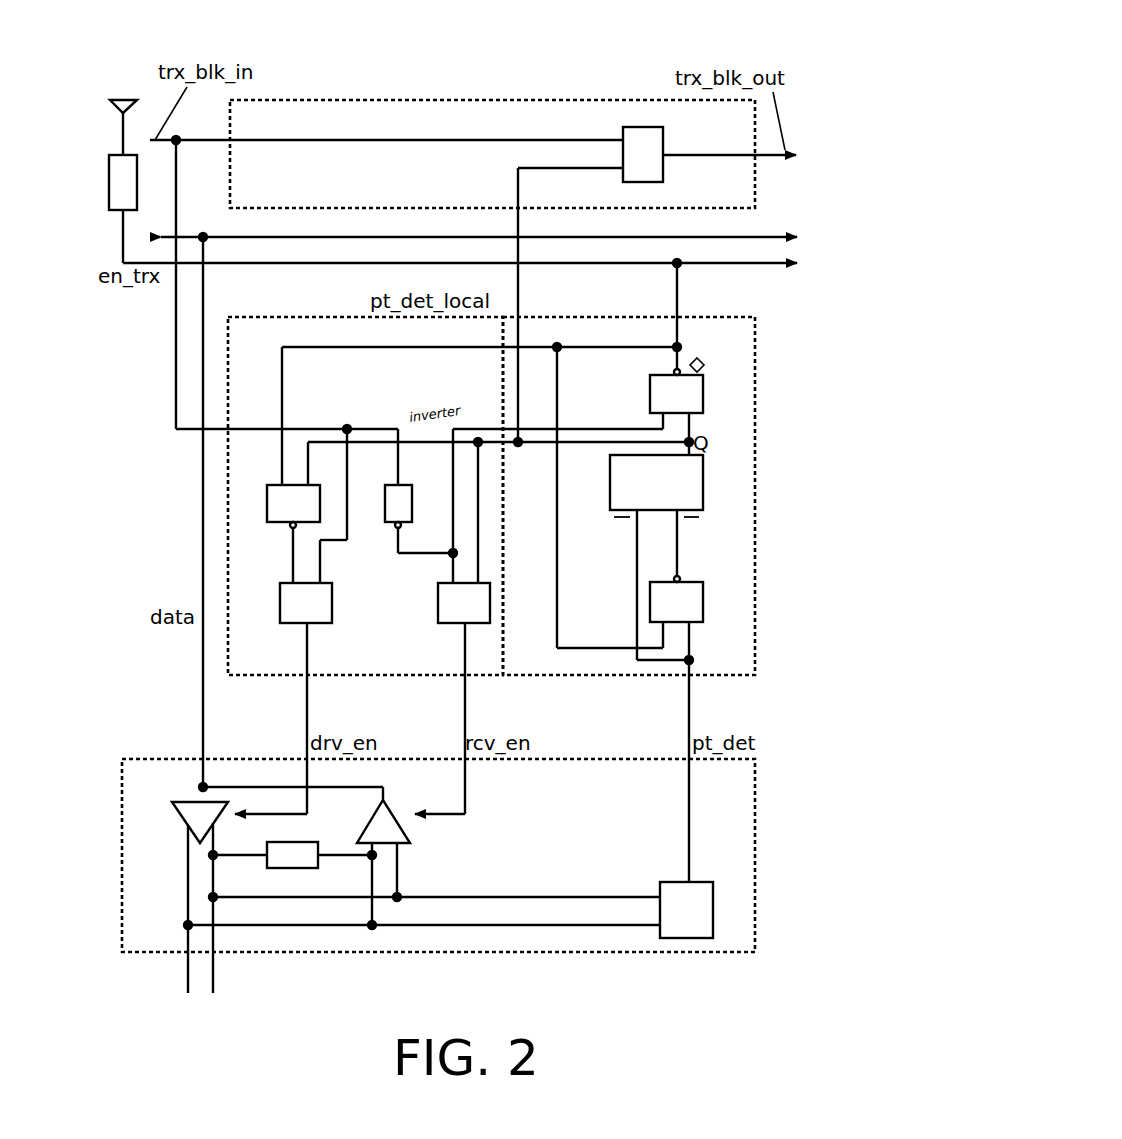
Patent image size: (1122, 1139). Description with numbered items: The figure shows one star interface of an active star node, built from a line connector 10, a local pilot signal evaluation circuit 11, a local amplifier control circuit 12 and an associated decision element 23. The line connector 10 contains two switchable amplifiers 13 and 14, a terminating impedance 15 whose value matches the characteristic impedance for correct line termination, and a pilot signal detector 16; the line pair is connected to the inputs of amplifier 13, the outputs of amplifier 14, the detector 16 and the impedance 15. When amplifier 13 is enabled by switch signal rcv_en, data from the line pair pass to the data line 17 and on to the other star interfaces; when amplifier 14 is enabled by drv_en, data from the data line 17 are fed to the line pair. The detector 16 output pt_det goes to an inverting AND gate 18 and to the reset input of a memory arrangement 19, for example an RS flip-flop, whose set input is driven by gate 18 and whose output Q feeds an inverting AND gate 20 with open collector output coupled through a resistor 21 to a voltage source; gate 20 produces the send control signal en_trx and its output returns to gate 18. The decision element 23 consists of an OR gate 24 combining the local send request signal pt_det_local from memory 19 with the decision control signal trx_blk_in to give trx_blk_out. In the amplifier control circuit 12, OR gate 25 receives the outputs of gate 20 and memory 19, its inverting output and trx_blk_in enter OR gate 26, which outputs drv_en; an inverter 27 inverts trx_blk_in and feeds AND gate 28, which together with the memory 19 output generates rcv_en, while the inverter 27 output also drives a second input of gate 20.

The line connector circuit 10 is at (738, 848).
The local pilot signal evaluation circuit 11 is at (740, 623).
The local amplifier control circuit 12 is at (253, 667).
The switchable amplifier 13 is at (388, 810).
The switchable amplifier 14 is at (188, 807).
The terminating impedance 15 is at (298, 850).
The pilot signal detector 16 is at (668, 895).
The data line 17 is at (200, 506).
The inverting AND gate 18 is at (693, 587).
The memory arrangement 19 is at (622, 485).
The inverting AND gate 20 is at (655, 390).
The resistor 21 is at (116, 182).
The decision element 23 is at (435, 117).
The OR gate 24 is at (653, 170).
The OR gate 25 is at (277, 493).
The OR gate 26 is at (327, 595).
The inverter 27 is at (405, 497).
The AND gate 28 is at (445, 612).